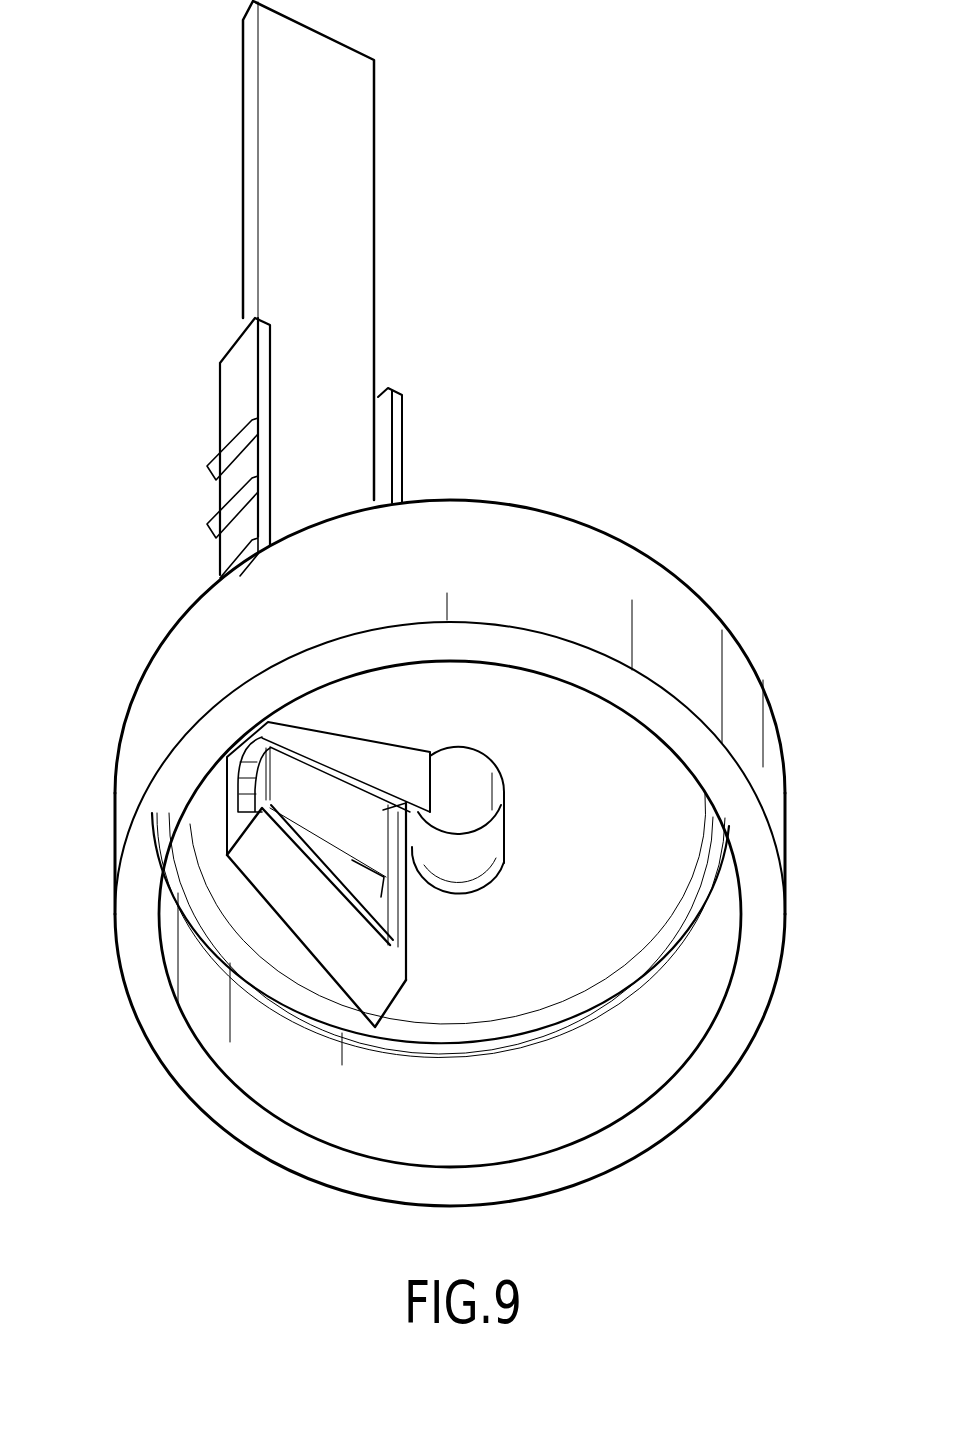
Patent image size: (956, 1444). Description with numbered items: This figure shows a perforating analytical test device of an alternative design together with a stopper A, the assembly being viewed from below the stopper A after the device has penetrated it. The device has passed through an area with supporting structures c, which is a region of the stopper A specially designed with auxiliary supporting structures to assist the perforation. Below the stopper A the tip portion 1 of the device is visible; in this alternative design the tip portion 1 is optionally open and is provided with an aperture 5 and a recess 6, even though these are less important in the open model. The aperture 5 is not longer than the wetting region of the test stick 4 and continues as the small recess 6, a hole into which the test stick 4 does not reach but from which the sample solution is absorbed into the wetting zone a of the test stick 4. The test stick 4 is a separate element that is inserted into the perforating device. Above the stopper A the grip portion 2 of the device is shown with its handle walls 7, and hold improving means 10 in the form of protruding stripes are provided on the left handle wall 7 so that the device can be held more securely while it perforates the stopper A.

The stopper A is at (750, 722).
The tip portion 1 is at (343, 958).
The test stick 4 is at (352, 292).
The grip portion 2 is at (231, 388).
The handle walls 7 is at (231, 487).
The hold improving means 10 is at (236, 528).
The area with supporting structures c is at (360, 730).
The aperture 5 is at (259, 793).
The recess 6 is at (372, 907).
The wetting zone a is at (363, 830).